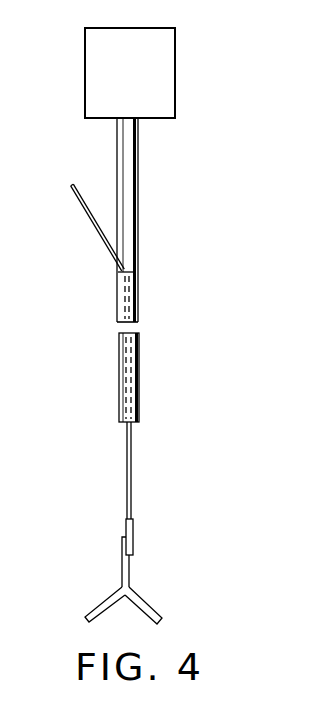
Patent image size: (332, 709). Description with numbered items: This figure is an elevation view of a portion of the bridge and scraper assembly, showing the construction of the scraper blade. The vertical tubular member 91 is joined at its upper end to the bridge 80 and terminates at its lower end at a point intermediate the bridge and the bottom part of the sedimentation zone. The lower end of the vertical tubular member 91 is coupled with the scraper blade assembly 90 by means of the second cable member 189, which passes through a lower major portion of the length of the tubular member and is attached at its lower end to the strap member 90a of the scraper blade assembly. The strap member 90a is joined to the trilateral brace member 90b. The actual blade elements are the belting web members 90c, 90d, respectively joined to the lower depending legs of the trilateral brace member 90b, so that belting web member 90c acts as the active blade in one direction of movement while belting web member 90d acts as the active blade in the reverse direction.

The bridge 80 is at (175, 68).
The vertical tubular member 91 is at (139, 193).
The second cable member 189 is at (94, 224).
The scraper blade assembly 90 is at (129, 571).
The strap member 90a is at (133, 541).
The trilateral brace member 90b is at (129, 574).
The belting web member 90c is at (143, 611).
The belting web member 90d is at (100, 606).